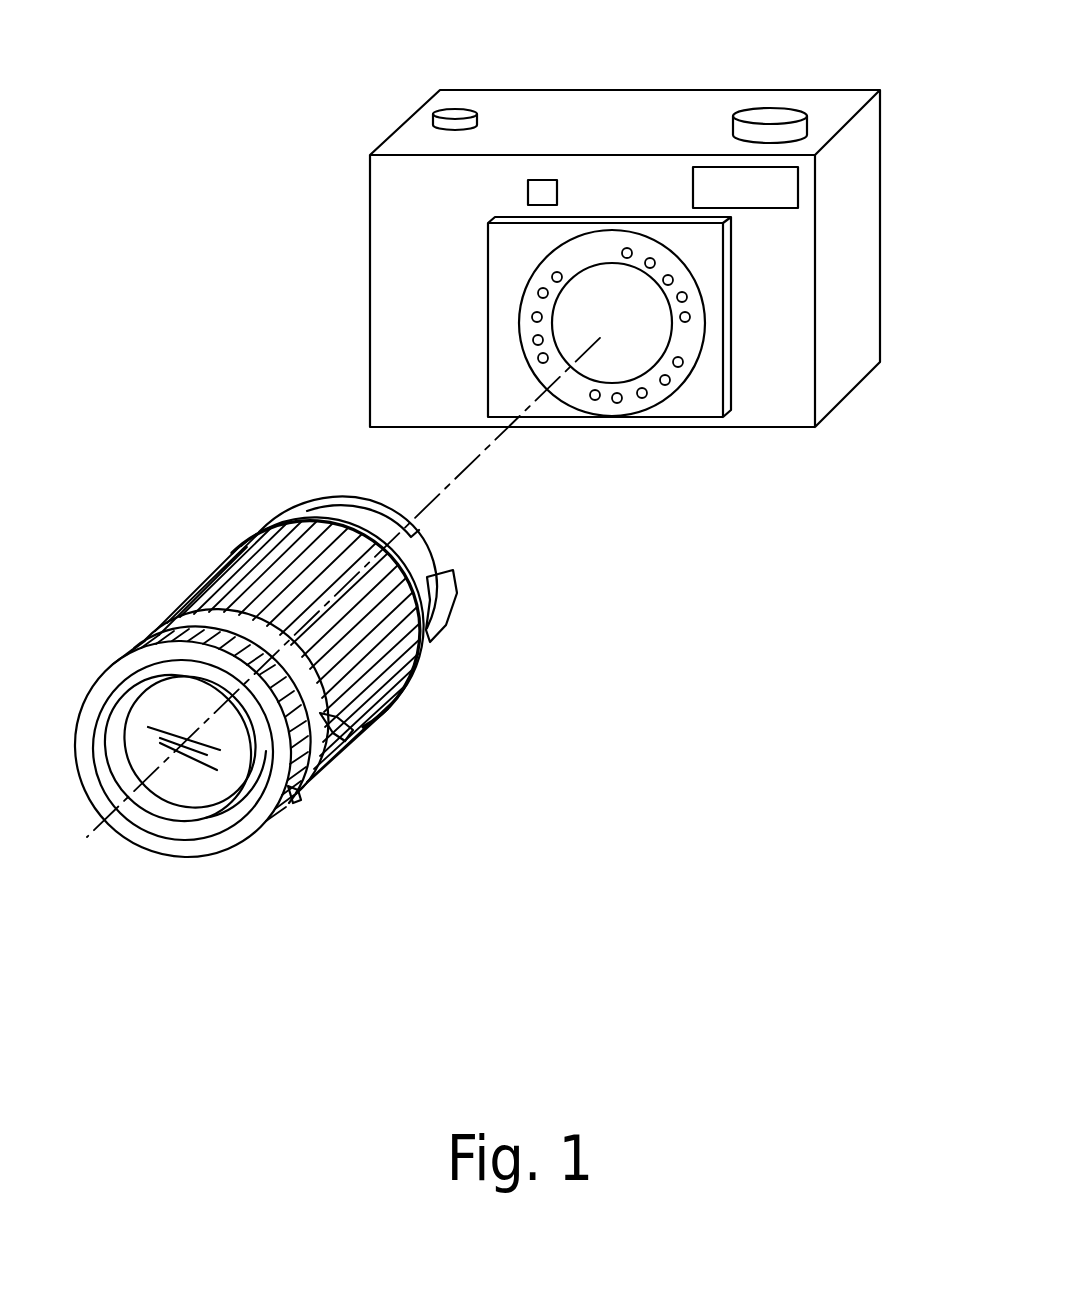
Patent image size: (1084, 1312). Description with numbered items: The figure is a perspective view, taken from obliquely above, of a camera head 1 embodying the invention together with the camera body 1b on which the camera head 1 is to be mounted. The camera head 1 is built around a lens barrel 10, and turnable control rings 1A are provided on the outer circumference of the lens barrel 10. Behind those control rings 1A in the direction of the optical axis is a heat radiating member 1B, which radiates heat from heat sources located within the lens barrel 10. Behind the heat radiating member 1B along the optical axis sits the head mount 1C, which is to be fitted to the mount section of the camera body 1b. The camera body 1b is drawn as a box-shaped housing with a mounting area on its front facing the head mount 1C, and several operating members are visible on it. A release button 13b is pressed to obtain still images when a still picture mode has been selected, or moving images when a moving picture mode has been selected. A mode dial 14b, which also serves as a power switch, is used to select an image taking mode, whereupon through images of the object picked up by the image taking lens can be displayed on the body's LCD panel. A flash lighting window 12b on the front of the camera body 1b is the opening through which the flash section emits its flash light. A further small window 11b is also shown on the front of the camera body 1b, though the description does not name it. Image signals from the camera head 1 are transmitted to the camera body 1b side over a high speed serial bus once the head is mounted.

The camera head 1 is at (209, 480).
The control rings 1A is at (170, 622).
The heat radiating member 1B is at (323, 527).
The head mount 1C is at (394, 501).
The lens barrel 10 is at (400, 857).
The camera body 1b is at (850, 255).
The finder window 11b is at (557, 191).
The flash lighting window 12b is at (765, 200).
The release button 13b is at (456, 110).
The mode dial 14b is at (771, 114).